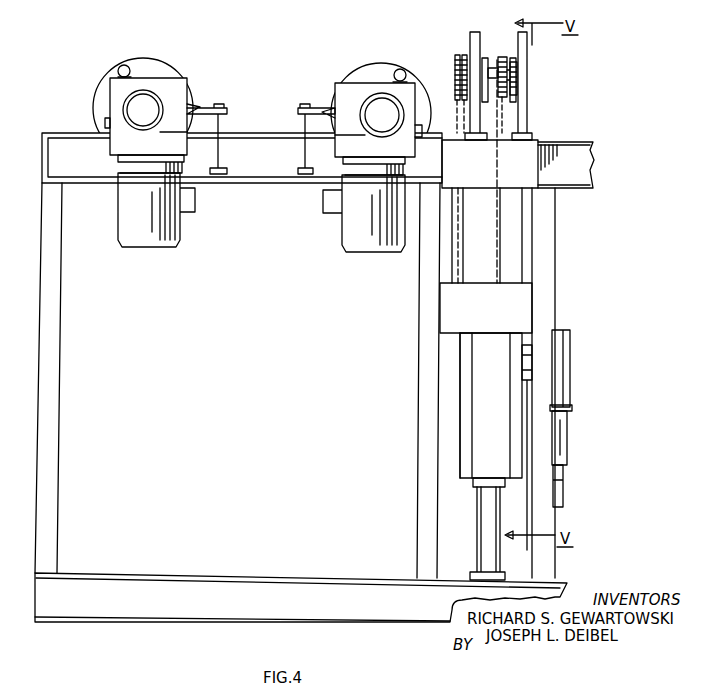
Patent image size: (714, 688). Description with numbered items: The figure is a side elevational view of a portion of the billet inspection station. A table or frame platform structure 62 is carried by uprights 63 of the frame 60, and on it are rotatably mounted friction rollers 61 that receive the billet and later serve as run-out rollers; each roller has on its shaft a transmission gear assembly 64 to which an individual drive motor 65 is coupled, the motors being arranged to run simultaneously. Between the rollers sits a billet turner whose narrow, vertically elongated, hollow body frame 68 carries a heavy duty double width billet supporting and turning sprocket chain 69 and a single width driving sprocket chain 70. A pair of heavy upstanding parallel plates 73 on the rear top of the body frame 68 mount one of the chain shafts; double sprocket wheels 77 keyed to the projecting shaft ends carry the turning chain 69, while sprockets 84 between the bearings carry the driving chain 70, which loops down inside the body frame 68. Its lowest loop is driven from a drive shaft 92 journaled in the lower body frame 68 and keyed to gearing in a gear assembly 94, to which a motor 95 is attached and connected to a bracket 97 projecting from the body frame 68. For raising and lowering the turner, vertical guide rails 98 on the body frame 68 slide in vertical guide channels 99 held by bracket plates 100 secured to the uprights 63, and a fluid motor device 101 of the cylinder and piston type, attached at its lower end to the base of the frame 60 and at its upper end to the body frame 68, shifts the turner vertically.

The frame 60 is at (298, 576).
The friction rollers 61 is at (163, 67).
The table or frame platform structure 62 is at (257, 134).
The uprights 63 is at (62, 405).
The transmission gear assembly 64 is at (125, 140).
The drive motor 65 is at (137, 218).
The body frame 68 is at (460, 375).
The billet supporting and turning sprocket chain 69 is at (450, 247).
The driving sprocket chain 70 is at (497, 250).
The plates 73 is at (472, 42).
The double sprocket wheels 77 is at (455, 72).
The sprockets 84 is at (503, 100).
The drive shaft 92 is at (527, 346).
The gear assembly 94 is at (570, 382).
The motor 95 is at (565, 452).
The bracket 97 is at (527, 420).
The guide rails 98 is at (498, 400).
The guide channels 99 is at (518, 276).
The bracket plates 100 is at (522, 182).
The fluid motor device 101 is at (490, 550).